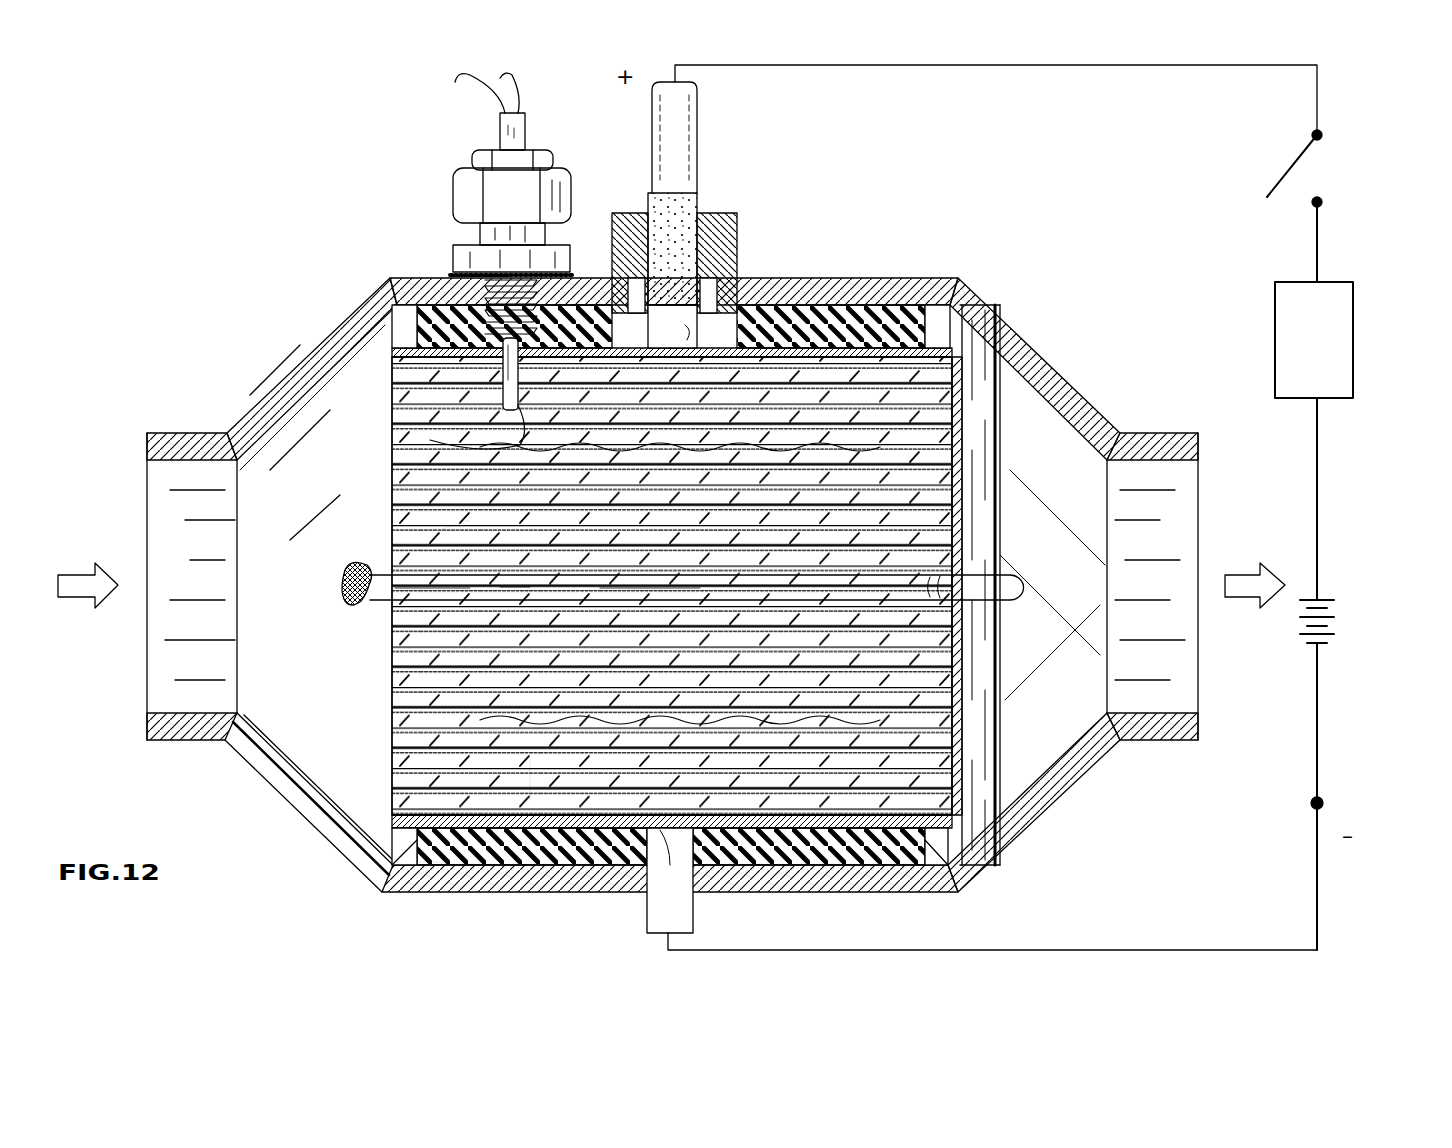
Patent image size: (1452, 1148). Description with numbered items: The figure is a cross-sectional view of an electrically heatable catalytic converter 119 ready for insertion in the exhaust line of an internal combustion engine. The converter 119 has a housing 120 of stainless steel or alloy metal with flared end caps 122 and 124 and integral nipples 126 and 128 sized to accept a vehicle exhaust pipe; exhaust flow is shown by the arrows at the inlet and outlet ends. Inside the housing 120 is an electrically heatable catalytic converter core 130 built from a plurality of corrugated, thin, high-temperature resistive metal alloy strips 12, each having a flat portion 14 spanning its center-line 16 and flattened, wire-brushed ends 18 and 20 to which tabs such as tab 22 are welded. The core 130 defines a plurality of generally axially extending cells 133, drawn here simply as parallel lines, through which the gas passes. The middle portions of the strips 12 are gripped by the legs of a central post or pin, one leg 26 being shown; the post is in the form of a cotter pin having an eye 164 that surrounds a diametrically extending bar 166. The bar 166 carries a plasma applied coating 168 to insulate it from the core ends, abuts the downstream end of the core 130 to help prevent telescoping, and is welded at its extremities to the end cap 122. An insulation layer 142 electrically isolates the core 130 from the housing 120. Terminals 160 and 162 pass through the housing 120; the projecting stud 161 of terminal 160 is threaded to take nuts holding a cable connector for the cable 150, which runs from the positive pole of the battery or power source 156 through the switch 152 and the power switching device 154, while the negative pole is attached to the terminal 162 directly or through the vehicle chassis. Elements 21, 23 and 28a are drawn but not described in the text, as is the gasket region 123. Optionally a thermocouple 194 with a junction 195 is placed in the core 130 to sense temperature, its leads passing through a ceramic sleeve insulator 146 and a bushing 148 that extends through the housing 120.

The strip 12 is at (906, 778).
The flat portion 14 is at (854, 408).
The center-line 16 is at (490, 596).
The end of the strip 18 is at (535, 740).
The end of the strip 20 is at (460, 520).
The terminal insulator block 21 is at (671, 326).
The tab 22 is at (775, 715).
The lower terminal insulator 23 is at (671, 861).
The leg of the central post or pin 26 is at (392, 858).
The electrode terminal 28a is at (700, 232).
The electrically heatable catalytic converter 119 is at (368, 150).
The housing 120 is at (440, 283).
The end cap 122 is at (1000, 325).
The gasket 123 is at (1020, 365).
The end cap 124 is at (172, 445).
The nipple 126 is at (1170, 445).
The nipple 128 is at (235, 470).
The electrically heatable catalytic converter core 130 is at (392, 700).
The cells 133 is at (410, 778).
The insulation layer 142 is at (760, 305).
The insulator 146 is at (525, 135).
The bushing 148 is at (468, 262).
The cable 150 is at (1010, 65).
The switch 152 is at (1292, 175).
The power switching device 154 is at (1335, 340).
The power source 156 is at (1345, 625).
The terminal 160 is at (718, 172).
The projecting stud 161 is at (700, 130).
The terminal 162 is at (688, 932).
The eye 164 is at (1025, 582).
The bar 166 is at (978, 675).
The plasma applied coating 168 is at (958, 520).
The thermocouple 194 is at (505, 385).
The junction 195 is at (505, 425).